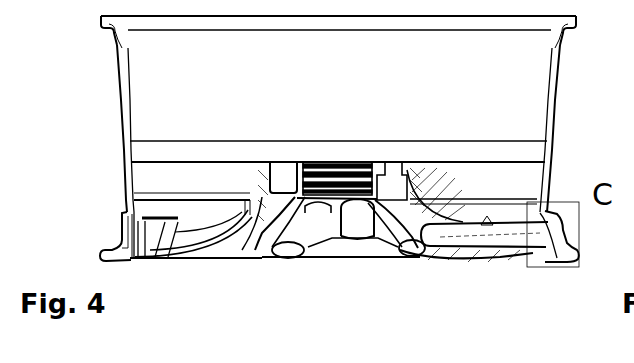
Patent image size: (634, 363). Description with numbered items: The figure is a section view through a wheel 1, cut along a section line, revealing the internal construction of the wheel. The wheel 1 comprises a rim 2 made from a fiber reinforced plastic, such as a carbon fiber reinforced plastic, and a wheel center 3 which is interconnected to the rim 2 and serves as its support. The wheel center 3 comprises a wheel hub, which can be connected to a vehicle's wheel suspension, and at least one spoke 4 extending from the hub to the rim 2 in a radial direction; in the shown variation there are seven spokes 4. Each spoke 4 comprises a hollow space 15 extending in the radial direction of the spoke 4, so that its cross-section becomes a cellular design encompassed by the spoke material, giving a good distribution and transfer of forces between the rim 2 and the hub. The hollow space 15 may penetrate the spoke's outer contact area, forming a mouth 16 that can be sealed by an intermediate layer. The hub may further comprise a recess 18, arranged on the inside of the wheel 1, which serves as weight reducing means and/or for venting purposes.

The wheel 1 is at (108, 47).
The rim 2 is at (120, 141).
The wheel center 3 is at (150, 232).
The spoke 4 is at (249, 157).
The hollow space 15 is at (484, 264).
The mouth 16 is at (547, 247).
The recess 18 is at (280, 177).